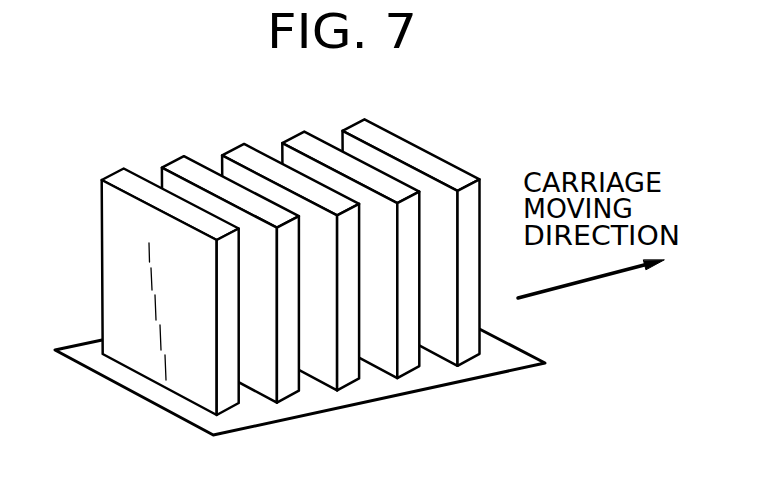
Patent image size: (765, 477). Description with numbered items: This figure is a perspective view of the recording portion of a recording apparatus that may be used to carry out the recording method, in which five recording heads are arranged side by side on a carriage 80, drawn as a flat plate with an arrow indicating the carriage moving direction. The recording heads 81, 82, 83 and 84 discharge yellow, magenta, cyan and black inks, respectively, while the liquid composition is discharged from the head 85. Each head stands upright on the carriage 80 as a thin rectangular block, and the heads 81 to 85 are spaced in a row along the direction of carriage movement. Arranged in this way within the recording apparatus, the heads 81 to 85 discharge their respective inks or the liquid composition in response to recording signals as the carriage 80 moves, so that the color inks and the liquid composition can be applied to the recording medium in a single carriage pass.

The carriage 80 is at (180, 413).
The recording head 81 is at (228, 402).
The recording head 82 is at (290, 388).
The recording head 83 is at (347, 370).
The recording head 84 is at (408, 358).
The head 85 is at (472, 347).